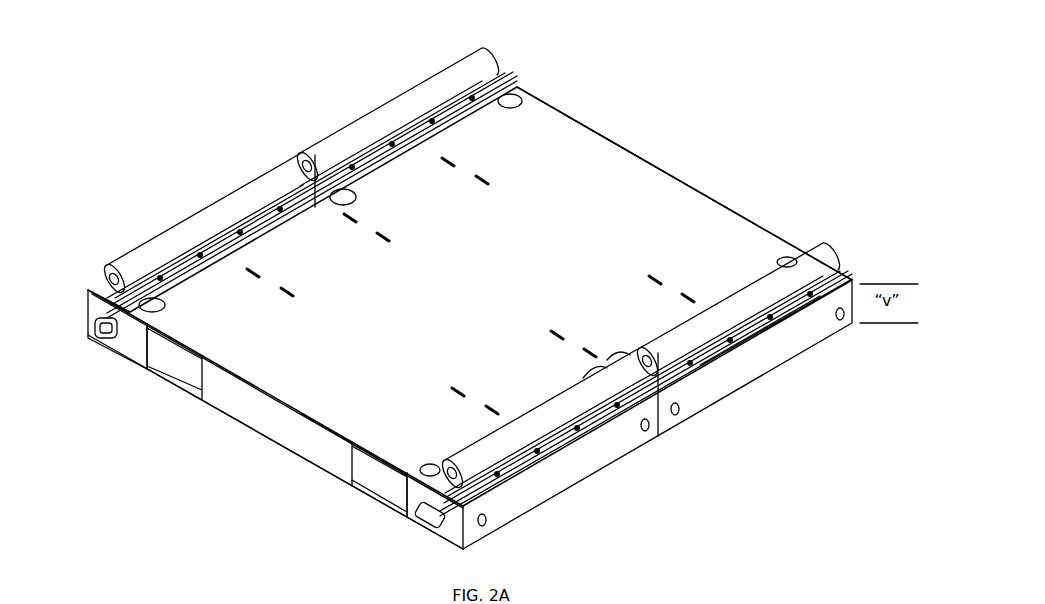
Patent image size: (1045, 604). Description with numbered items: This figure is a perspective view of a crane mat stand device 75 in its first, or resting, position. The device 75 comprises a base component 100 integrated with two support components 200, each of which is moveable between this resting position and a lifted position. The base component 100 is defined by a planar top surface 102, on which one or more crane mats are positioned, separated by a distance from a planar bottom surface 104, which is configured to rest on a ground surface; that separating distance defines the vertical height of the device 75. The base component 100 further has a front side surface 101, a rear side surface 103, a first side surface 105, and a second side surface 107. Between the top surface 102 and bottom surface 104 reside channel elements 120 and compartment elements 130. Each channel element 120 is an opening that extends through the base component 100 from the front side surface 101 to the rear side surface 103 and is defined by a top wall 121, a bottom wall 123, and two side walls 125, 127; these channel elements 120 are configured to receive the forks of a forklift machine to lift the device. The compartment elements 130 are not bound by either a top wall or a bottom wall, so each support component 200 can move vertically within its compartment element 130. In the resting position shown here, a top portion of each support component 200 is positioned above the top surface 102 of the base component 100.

The crane mat stand device 75 is at (146, 43).
The base component 100 is at (553, 138).
The front side surface 101 is at (217, 385).
The top surface 102 is at (633, 177).
The rear side surface 103 is at (698, 188).
The bottom surface 104 is at (260, 422).
The first side surface 105 is at (580, 458).
The second side surface 107 is at (95, 290).
The channel element 120 is at (150, 363).
The top wall 121 is at (370, 460).
The bottom wall 123 is at (388, 483).
The side wall 125 is at (408, 483).
The side wall 127 is at (363, 463).
The compartment element 130 is at (747, 338).
The support component 200 is at (420, 100).